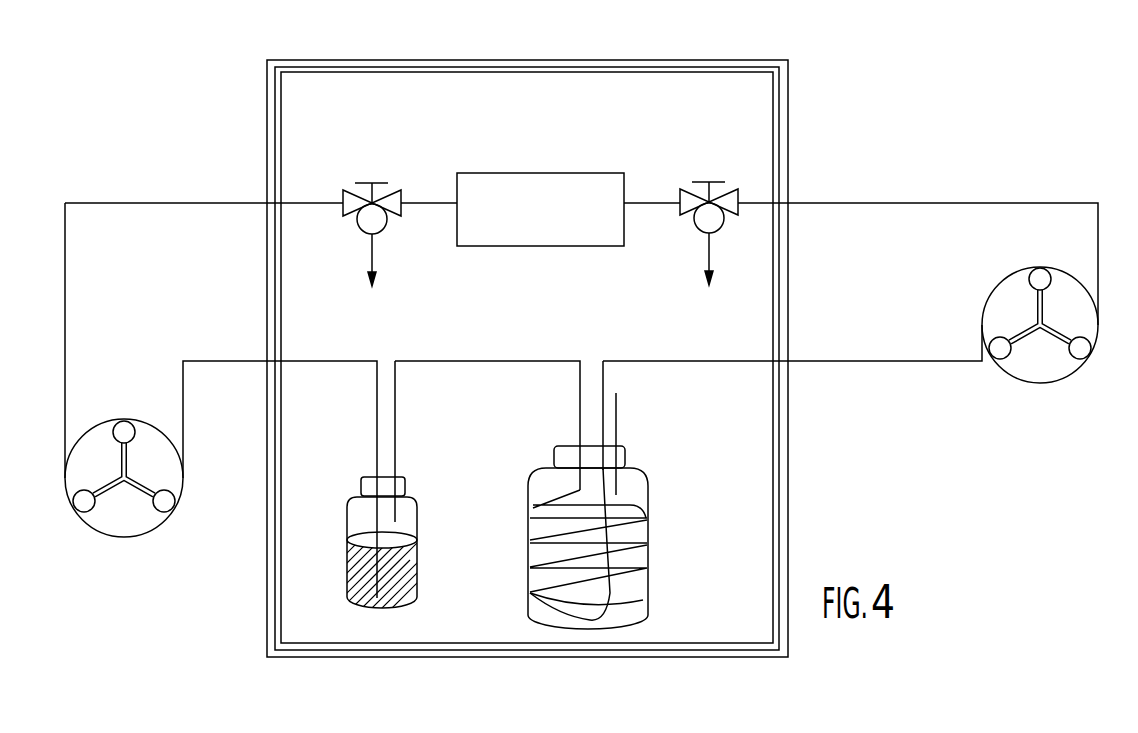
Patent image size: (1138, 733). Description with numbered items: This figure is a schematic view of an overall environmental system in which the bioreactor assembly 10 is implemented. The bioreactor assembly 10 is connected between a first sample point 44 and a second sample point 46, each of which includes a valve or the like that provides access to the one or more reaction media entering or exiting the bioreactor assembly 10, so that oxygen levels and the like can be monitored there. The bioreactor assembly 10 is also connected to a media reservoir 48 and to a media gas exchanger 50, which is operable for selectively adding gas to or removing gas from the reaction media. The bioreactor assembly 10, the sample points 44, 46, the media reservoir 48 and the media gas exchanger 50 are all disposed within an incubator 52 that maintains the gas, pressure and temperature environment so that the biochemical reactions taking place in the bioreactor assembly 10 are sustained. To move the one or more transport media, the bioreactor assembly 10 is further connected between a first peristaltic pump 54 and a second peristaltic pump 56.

The bioreactor assembly 10 is at (600, 173).
The first sample point 44 is at (400, 178).
The second sample point 46 is at (738, 172).
The media reservoir 48 is at (407, 628).
The media gas exchanger 50 is at (615, 642).
The incubator 52 is at (745, 59).
The first peristaltic pump 54 is at (154, 423).
The second peristaltic pump 56 is at (997, 283).